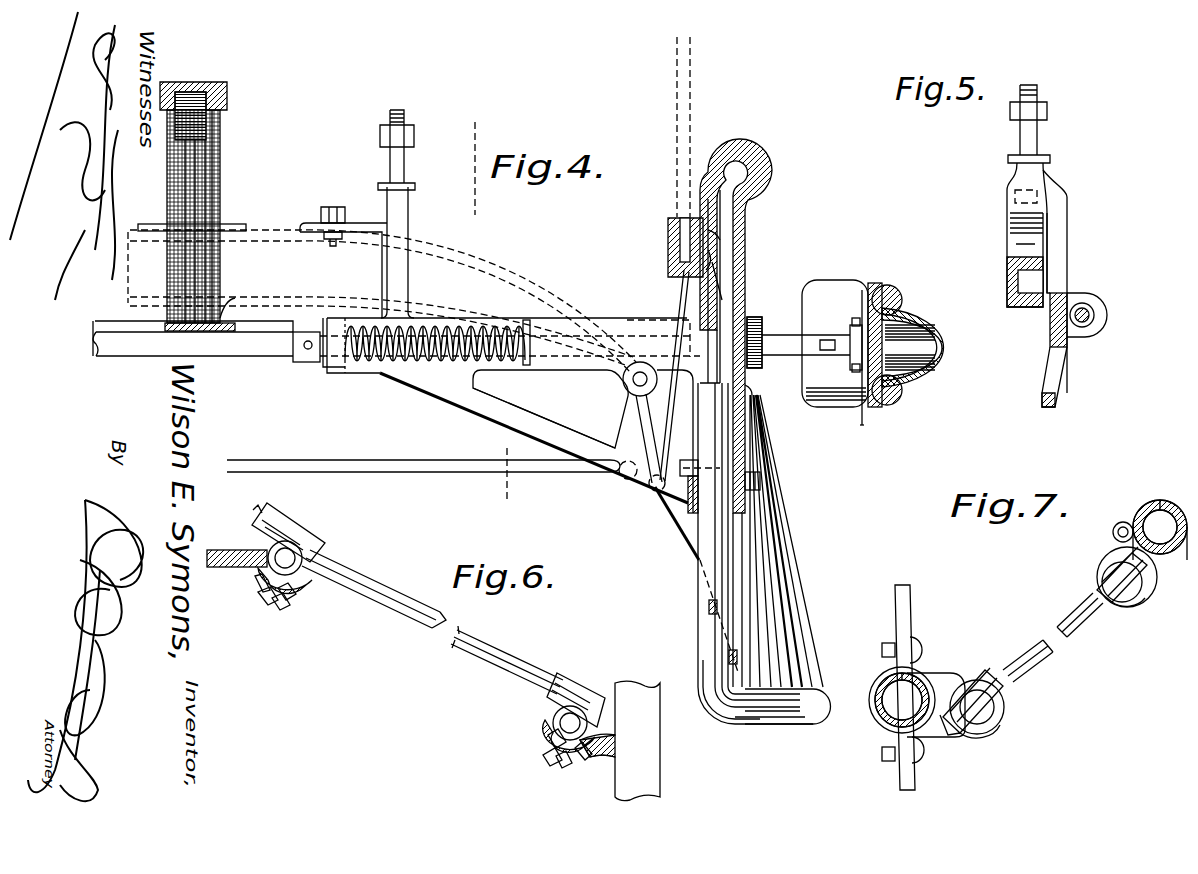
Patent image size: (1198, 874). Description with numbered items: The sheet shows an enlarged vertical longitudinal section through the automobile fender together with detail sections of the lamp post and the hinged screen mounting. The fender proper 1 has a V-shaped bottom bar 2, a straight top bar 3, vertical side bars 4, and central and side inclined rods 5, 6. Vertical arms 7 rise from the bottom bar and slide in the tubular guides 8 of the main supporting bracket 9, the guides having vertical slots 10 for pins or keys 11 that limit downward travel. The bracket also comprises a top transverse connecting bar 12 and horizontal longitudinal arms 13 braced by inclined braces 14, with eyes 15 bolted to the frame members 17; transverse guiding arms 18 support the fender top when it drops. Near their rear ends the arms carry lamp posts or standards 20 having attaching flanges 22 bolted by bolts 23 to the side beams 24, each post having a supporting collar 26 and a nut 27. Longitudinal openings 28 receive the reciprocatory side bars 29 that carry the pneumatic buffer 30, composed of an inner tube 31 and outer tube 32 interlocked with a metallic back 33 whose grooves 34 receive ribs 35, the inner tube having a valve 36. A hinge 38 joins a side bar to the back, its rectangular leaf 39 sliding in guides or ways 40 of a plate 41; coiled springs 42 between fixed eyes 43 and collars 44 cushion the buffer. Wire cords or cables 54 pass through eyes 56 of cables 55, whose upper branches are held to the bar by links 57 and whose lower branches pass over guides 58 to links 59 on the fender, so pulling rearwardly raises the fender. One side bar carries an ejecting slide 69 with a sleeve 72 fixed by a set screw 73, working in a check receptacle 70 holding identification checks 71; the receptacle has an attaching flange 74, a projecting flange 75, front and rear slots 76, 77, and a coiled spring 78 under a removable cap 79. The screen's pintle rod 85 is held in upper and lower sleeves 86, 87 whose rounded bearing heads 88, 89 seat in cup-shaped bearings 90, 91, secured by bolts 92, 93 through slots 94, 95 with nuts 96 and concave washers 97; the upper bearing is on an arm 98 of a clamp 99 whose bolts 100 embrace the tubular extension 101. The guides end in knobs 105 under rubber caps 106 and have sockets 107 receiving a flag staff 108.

In FIG. 4, the fender proper 1 is at (789, 559).
In FIG. 4, the bottom bar 2 is at (785, 726).
In FIG. 4, the top bar 3 is at (752, 396).
In FIG. 4, the side bars 4 is at (752, 548).
In FIG. 4, the central inclined rods 5 is at (808, 576).
In FIG. 4, the side inclined rods 6 is at (780, 625).
In FIG. 4, the vertical arms 7 is at (712, 545).
In FIG. 4, the tubular guides 8 is at (748, 297).
In FIG. 6, the tubular guides 8 is at (655, 771).
In FIG. 7, the tubular guides 8 is at (1156, 506).
In FIG. 4, the main supporting bracket 9 is at (628, 322).
In FIG. 4, the vertical slots 10 is at (693, 415).
In FIG. 4, the pins or keys 11 is at (688, 462).
In FIG. 4, the top transverse connecting bar 12 is at (735, 226).
In FIG. 4, the horizontal longitudinal arms 13 is at (562, 322).
In FIG. 5, the horizontal longitudinal arms 13 is at (1052, 321).
In FIG. 4, the inclined braces 14 is at (500, 412).
In FIG. 5, the inclined braces 14 is at (1058, 386).
In FIG. 4, the eyes 15 is at (637, 392).
In FIG. 4, the frame members 17 is at (474, 258).
In FIG. 5, the frame members 17 is at (1015, 250).
In FIG. 4, the guiding arms 18 is at (760, 482).
In FIG. 4, the posts or standards 20 is at (410, 280).
In FIG. 5, the posts or standards 20 is at (1068, 228).
In FIG. 4, the attaching flanges 22 is at (310, 222).
In FIG. 5, the attaching flanges 22 is at (1045, 200).
In FIG. 4, the bolts 23 is at (333, 242).
In FIG. 5, the bolts 23 is at (1012, 192).
In FIG. 4, the side beams 24 is at (270, 229).
In FIG. 4, the supporting collar or shoulder 26 is at (415, 186).
In FIG. 5, the supporting collar or shoulder 26 is at (1050, 160).
In FIG. 4, the nut 27 is at (414, 136).
In FIG. 5, the nut 27 is at (1048, 112).
In FIG. 4, the longitudinal openings 28 is at (547, 365).
In FIG. 4, the reciprocatory side bars 29 is at (132, 345).
In FIG. 5, the reciprocatory side bars 29 is at (1098, 322).
In FIG. 4, the pneumatic buffer 30 is at (921, 351).
In FIG. 4, the inner tube 31 is at (910, 347).
In FIG. 4, the outer tube 32 is at (950, 345).
In FIG. 4, the metallic back 33 is at (856, 402).
In FIG. 4, the grooves 34 is at (900, 292).
In FIG. 4, the ribs 35 is at (886, 284).
In FIG. 4, the valve 36 is at (842, 346).
In FIG. 4, the hinge 38 is at (854, 320).
In FIG. 4, the leaf or hinge element 39 is at (862, 290).
In FIG. 4, the guides or ways 40 is at (850, 330).
In FIG. 4, the plate 41 is at (865, 430).
In FIG. 4, the coiled springs 42 is at (420, 340).
In FIG. 5, the coiled springs 42 is at (1096, 315).
In FIG. 4, the fixed eyes 43 is at (330, 366).
In FIG. 5, the fixed eyes 43 is at (1097, 302).
In FIG. 4, the collars 44 is at (527, 330).
In FIG. 4, the wire cords or cables 54 is at (426, 466).
In FIG. 4, the wire cords or cables 55 is at (685, 538).
In FIG. 4, the eyes 56 is at (620, 474).
In FIG. 4, the links 57 is at (725, 262).
In FIG. 4, the guides 58 is at (648, 488).
In FIG. 4, the links 59 is at (737, 682).
In FIG. 4, the ejecting slide 69 is at (270, 317).
In FIG. 4, the receptacle 70 is at (222, 184).
In FIG. 4, the identification checks 71 is at (182, 268).
In FIG. 4, the sleeve 72 is at (292, 356).
In FIG. 4, the set screw 73 is at (308, 352).
In FIG. 4, the attaching flange 74 is at (237, 233).
In FIG. 4, the forwardly projecting flange 75 is at (225, 326).
In FIG. 4, the front slot 76 is at (222, 316).
In FIG. 4, the rear slot 77 is at (165, 326).
In FIG. 4, the coiled spring 78 is at (207, 118).
In FIG. 4, the removable cap 79 is at (228, 96).
In FIG. 6, the pintle rod 85 is at (385, 584).
In FIG. 7, the pintle rod 85 is at (1020, 648).
In FIG. 6, the upper eye or sleeve 86 is at (305, 532).
In FIG. 7, the upper eye or sleeve 86 is at (975, 685).
In FIG. 6, the lower eye or sleeve 87 is at (575, 687).
In FIG. 7, the lower eye or sleeve 87 is at (1095, 575).
In FIG. 6, the bearing head 88 is at (300, 552).
In FIG. 7, the bearing head 88 is at (995, 722).
In FIG. 6, the bearing head 89 is at (555, 718).
In FIG. 7, the bearing head 89 is at (1142, 590).
In FIG. 6, the upper bearing 90 is at (305, 588).
In FIG. 7, the upper bearing 90 is at (1003, 705).
In FIG. 6, the lower bearing 91 is at (545, 728).
In FIG. 7, the lower bearing 91 is at (1132, 605).
In FIG. 6, the bolt 92 is at (275, 605).
In FIG. 6, the bolt 93 is at (558, 762).
In FIG. 6, the slot 94 is at (288, 598).
In FIG. 6, the slot 95 is at (550, 740).
In FIG. 6, the nuts 96 is at (258, 595).
In FIG. 6, the plates or washers 97 is at (256, 580).
In FIG. 6, the plate or arm 98 is at (240, 552).
In FIG. 7, the plate or arm 98 is at (940, 680).
In FIG. 7, the clamp 99 is at (915, 650).
In FIG. 7, the bolts 100 is at (885, 648).
In FIG. 7, the tubular extension 101 is at (885, 710).
In FIG. 4, the knobs or heads 105 is at (773, 176).
In FIG. 4, the caps 106 is at (766, 150).
In FIG. 4, the vertical sockets 107 is at (668, 228).
In FIG. 7, the vertical sockets 107 is at (1122, 522).
In FIG. 4, the staff 108 is at (676, 95).